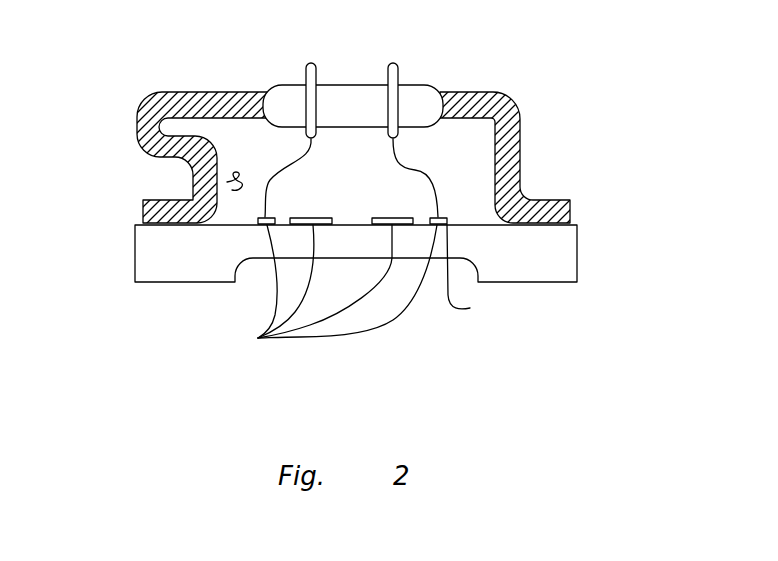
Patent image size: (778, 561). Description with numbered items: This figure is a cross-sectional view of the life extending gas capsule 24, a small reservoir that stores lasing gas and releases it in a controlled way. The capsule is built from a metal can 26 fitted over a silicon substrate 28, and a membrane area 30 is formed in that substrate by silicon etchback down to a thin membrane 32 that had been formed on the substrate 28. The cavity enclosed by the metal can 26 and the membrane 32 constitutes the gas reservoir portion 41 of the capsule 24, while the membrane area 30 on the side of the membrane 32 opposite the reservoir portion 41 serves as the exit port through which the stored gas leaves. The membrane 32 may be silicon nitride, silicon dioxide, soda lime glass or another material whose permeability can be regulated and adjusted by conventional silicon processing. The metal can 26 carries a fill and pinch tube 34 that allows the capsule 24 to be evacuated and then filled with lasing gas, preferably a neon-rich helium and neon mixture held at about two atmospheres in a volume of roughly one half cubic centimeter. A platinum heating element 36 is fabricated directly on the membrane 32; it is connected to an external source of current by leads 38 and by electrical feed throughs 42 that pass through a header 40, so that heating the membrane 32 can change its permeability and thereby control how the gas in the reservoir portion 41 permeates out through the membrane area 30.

The life extending gas capsule 24 is at (545, 120).
The metal can 26 is at (520, 180).
The silicon substrate 28 is at (562, 263).
The membrane area 30 is at (370, 352).
The membrane 32 is at (470, 308).
The fill and pinch tube 34 is at (137, 120).
The platinum heating element 36 is at (258, 338).
The leads 38 is at (267, 183).
The header 40 is at (415, 87).
The gas reservoir portion 41 is at (227, 182).
The electrical feed throughs 42 is at (306, 73).